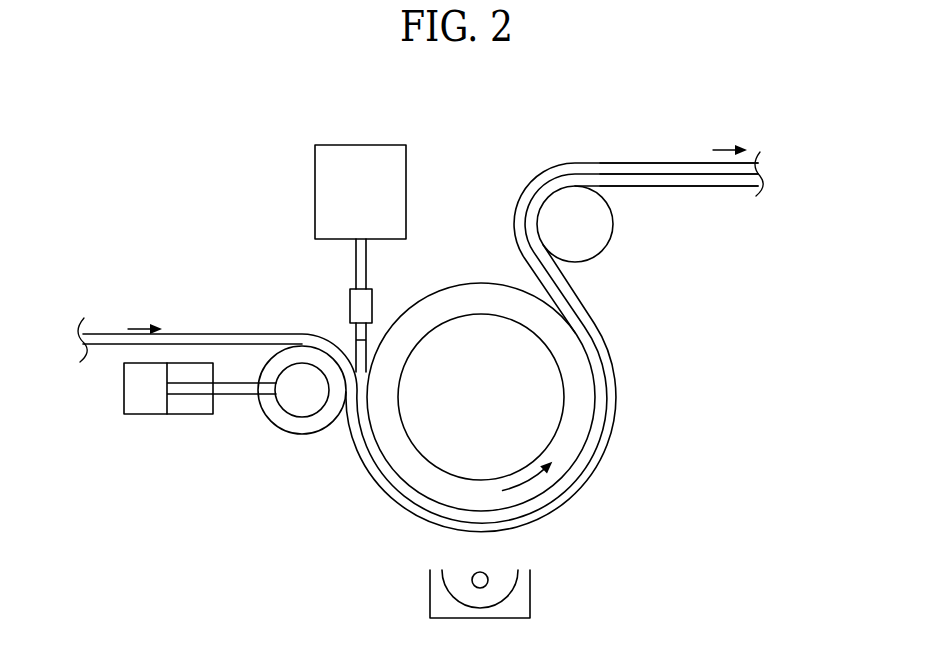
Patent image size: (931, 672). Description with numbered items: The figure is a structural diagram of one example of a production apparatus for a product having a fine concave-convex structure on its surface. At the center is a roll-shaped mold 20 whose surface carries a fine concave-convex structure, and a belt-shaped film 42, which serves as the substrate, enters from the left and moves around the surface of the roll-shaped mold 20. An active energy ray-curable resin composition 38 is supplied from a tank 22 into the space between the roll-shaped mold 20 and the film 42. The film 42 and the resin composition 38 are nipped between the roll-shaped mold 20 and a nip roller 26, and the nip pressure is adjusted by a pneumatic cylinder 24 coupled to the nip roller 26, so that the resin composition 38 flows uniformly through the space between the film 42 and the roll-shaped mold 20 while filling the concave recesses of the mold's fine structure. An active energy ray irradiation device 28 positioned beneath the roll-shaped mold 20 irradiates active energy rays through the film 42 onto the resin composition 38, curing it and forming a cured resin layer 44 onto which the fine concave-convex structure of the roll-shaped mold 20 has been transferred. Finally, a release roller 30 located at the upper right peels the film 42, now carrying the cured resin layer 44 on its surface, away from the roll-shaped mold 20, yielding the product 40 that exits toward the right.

The roll-shaped mold 20 is at (470, 283).
The tank 22 is at (315, 190).
The pneumatic cylinder 24 is at (185, 415).
The nip roller 26 is at (303, 434).
The active energy ray irradiation device 28 is at (530, 588).
The release roller 30 is at (613, 225).
The active energy ray-curable resin composition 38 is at (352, 345).
The product 40 is at (685, 96).
The film 42 is at (222, 334).
The cured resin layer 44 is at (622, 170).